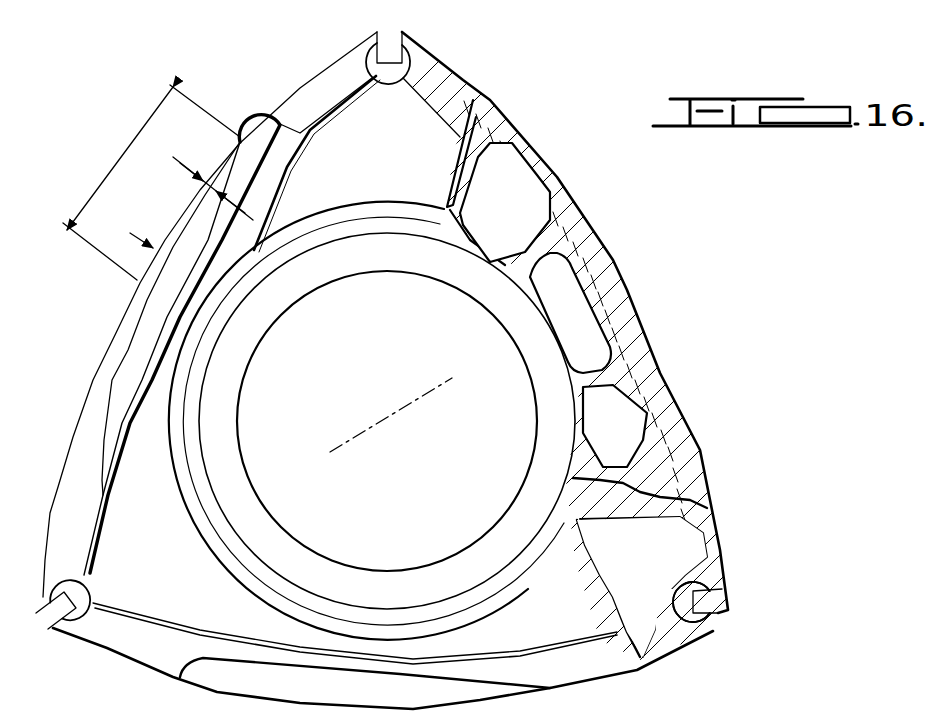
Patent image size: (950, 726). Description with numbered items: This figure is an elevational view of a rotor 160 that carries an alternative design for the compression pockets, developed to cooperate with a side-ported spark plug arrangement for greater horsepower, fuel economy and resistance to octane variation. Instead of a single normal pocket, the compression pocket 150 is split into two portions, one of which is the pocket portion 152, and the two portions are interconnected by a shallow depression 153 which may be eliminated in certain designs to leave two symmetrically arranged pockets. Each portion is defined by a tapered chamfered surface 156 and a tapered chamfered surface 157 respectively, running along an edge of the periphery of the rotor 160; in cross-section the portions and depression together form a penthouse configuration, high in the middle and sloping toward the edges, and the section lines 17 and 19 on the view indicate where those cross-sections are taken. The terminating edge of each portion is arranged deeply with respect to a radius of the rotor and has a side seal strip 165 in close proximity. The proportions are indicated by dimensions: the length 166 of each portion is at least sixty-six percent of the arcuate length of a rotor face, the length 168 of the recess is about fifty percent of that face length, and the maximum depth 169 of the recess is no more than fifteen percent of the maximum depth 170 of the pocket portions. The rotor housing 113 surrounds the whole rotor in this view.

The rotor housing 113 is at (379, 379).
The compression pocket 150 is at (246, 128).
The pocket portion 152 is at (147, 302).
The shallow depression 153 is at (185, 223).
The tapered chamfered surface 156 is at (321, 689).
The tapered chamfered surface 157 is at (667, 380).
The rotor 160 is at (294, 92).
The side seal strip 165 is at (197, 277).
The length of each portion 166 is at (280, 123).
The length of the recess 168 is at (151, 182).
The maximum depth of the recess 169 is at (182, 172).
The maximum depth of the portions 170 is at (187, 277).
The section line 17 is at (560, 318).
The section line 19 is at (530, 229).